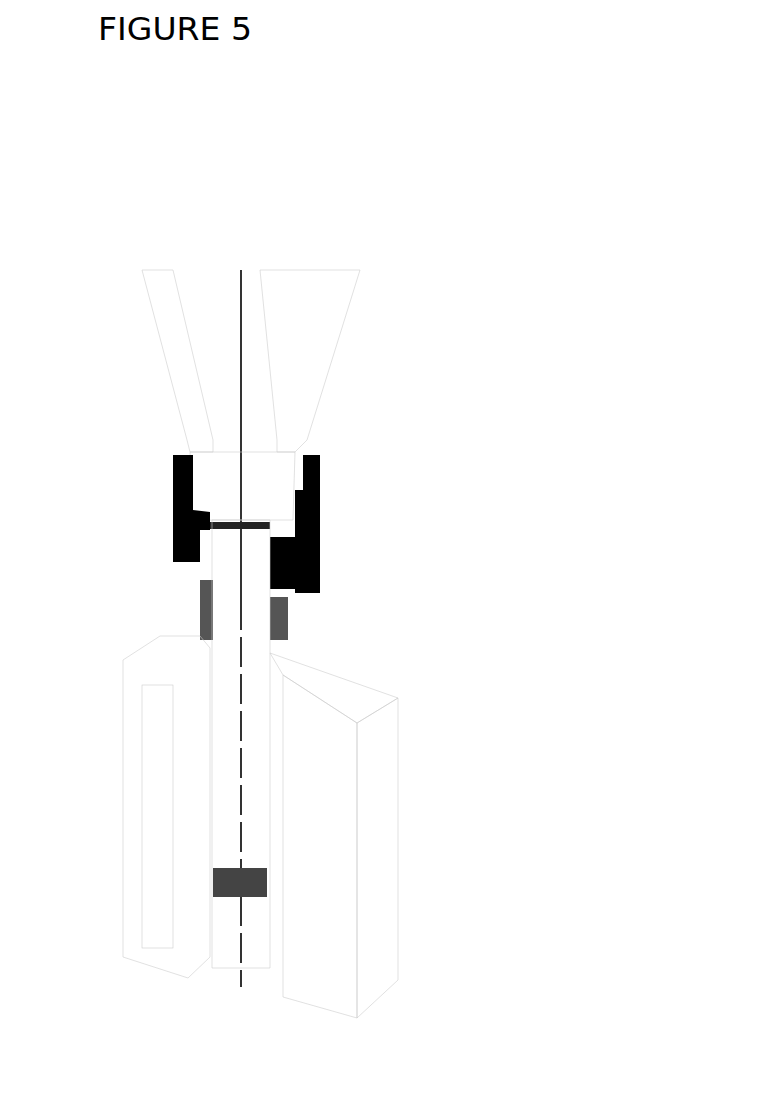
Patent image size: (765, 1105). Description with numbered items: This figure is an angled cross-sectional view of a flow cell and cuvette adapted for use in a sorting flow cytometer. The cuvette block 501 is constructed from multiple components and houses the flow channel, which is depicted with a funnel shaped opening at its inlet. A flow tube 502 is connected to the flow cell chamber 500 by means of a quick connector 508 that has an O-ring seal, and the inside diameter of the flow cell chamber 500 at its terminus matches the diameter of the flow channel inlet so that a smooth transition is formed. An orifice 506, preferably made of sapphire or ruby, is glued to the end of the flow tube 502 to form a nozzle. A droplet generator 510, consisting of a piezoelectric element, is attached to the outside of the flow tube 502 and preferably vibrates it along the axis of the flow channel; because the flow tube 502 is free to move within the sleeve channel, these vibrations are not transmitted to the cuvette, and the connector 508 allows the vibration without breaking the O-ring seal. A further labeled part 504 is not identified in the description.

The flow cell chamber 500 is at (314, 395).
The cuvette block 501 is at (400, 750).
The flow tube 502 is at (202, 624).
The central tube 504 is at (330, 657).
The orifice 506 is at (447, 854).
The quick connector 508 is at (413, 524).
The droplet generator 510 is at (494, 601).